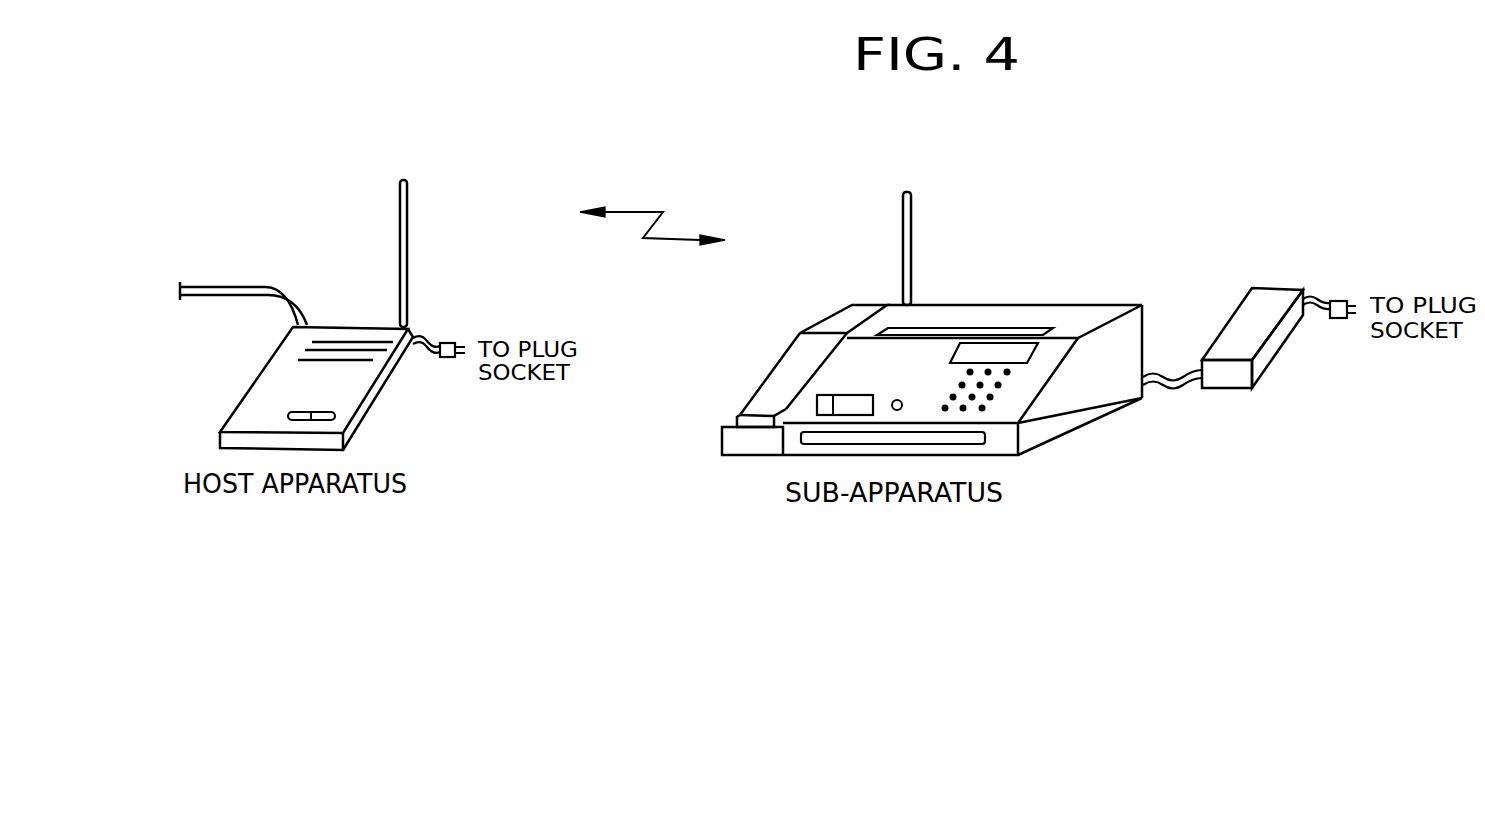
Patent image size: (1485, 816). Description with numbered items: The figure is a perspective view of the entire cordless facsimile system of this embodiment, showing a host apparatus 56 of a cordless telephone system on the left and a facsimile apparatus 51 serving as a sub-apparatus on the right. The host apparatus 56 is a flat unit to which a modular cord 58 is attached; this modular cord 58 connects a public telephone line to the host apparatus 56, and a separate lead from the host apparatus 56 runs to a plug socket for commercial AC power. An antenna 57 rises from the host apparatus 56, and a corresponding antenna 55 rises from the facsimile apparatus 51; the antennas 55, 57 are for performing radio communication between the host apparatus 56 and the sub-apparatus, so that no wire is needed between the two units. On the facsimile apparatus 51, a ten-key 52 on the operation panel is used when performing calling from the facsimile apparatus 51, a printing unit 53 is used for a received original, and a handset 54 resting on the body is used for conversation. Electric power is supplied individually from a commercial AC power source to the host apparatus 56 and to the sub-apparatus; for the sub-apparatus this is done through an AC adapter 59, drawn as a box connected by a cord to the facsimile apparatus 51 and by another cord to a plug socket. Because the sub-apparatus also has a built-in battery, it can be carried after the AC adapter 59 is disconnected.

The facsimile apparatus 51 is at (1148, 322).
The ten-key 52 is at (998, 403).
The printing unit 53 is at (1018, 333).
The handset 54 is at (757, 388).
The antenna 55 is at (913, 222).
The host apparatus 56 is at (373, 400).
The antenna 57 is at (408, 208).
The modular cord 58 is at (217, 288).
The AC adapter 59 is at (1237, 389).